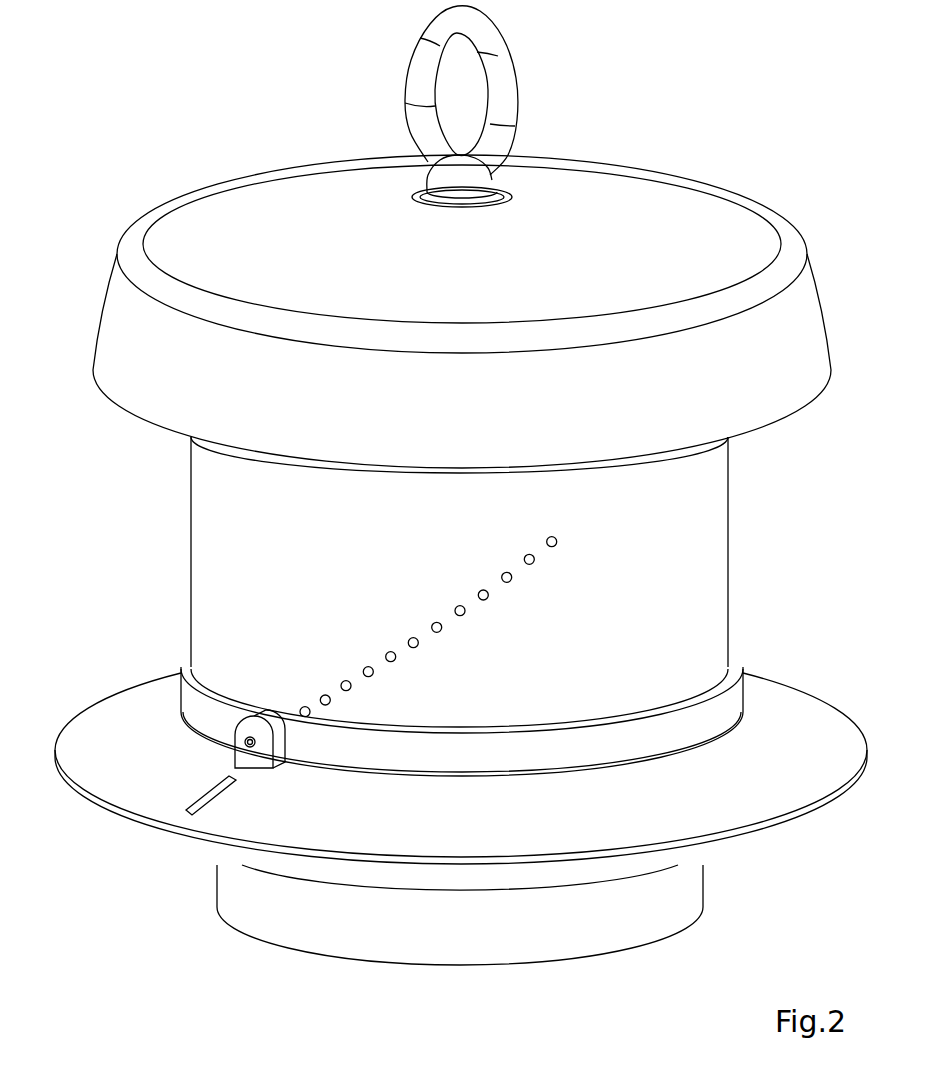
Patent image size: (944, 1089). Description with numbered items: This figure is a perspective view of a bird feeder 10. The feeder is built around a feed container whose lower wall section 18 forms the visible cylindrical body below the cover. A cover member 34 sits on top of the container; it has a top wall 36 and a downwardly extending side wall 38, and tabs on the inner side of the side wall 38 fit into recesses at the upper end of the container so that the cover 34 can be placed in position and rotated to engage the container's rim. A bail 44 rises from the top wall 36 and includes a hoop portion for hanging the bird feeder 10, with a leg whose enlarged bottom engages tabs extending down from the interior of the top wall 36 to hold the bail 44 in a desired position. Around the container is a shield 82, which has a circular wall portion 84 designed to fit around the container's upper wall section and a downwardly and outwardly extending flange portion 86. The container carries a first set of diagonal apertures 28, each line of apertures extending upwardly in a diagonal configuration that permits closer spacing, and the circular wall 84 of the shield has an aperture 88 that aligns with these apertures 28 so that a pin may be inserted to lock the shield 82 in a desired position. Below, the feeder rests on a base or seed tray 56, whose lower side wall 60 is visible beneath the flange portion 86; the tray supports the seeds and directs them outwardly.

The bird feeder 10 is at (195, 148).
The lower wall section 18 is at (459, 552).
The first set of diagonal apertures 28 is at (463, 614).
The cover member 34 is at (790, 212).
The top wall 36 is at (462, 244).
The side wall 38 is at (462, 361).
The bail 44 is at (512, 49).
The seed tray 56 is at (212, 905).
The lower side wall 60 is at (460, 936).
The shield 82 is at (95, 697).
The circular wall portion 84 is at (462, 721).
The flange portion 86 is at (461, 807).
The aperture 88 is at (246, 748).